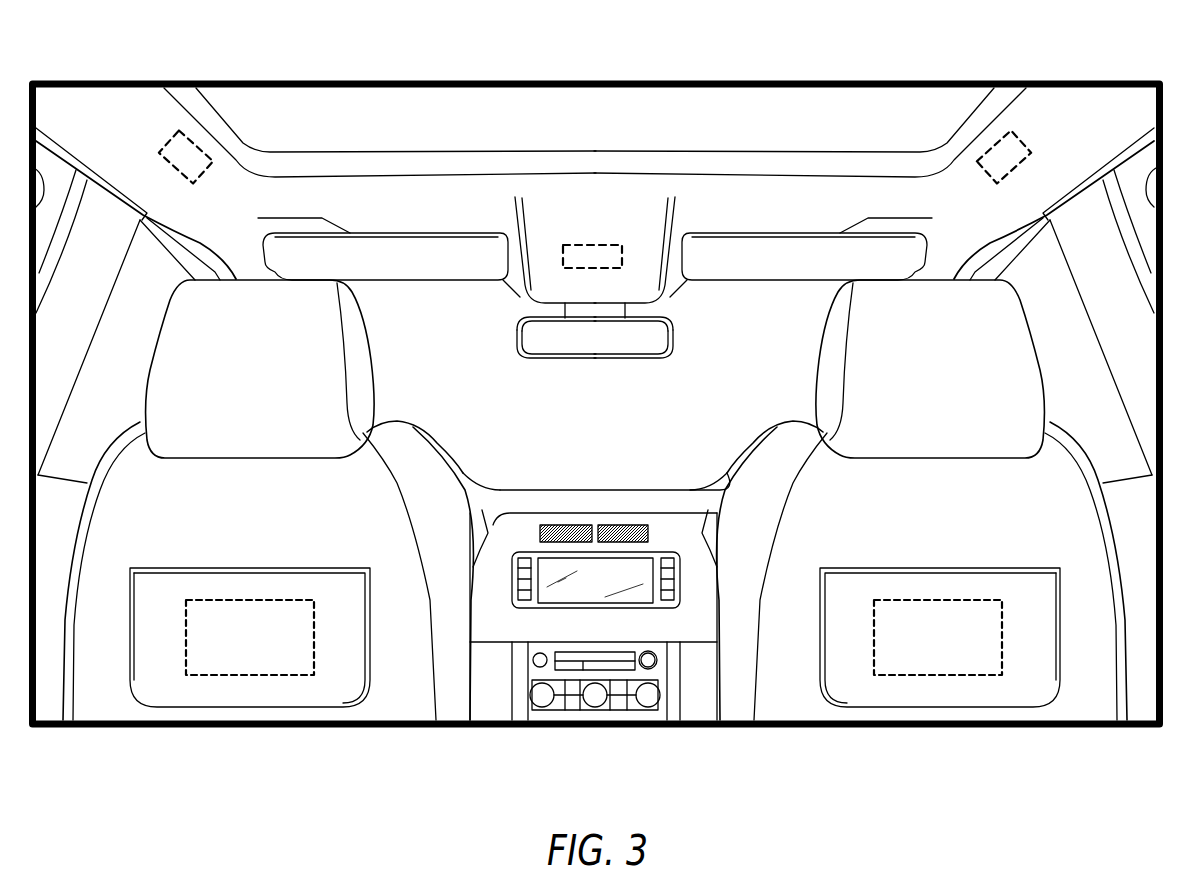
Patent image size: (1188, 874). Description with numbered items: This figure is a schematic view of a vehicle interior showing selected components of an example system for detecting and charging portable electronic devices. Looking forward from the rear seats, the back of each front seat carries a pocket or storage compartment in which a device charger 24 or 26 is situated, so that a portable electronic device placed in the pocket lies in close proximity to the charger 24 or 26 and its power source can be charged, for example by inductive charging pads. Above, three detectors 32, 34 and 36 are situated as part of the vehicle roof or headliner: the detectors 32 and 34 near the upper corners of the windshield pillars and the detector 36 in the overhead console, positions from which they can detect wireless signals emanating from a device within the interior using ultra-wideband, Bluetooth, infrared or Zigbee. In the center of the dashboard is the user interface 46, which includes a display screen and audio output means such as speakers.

The device charger 24 is at (210, 677).
The device charger 26 is at (975, 677).
The detector 32 is at (200, 147).
The detector 34 is at (990, 147).
The detector 36 is at (593, 243).
The user interface 46 is at (593, 580).